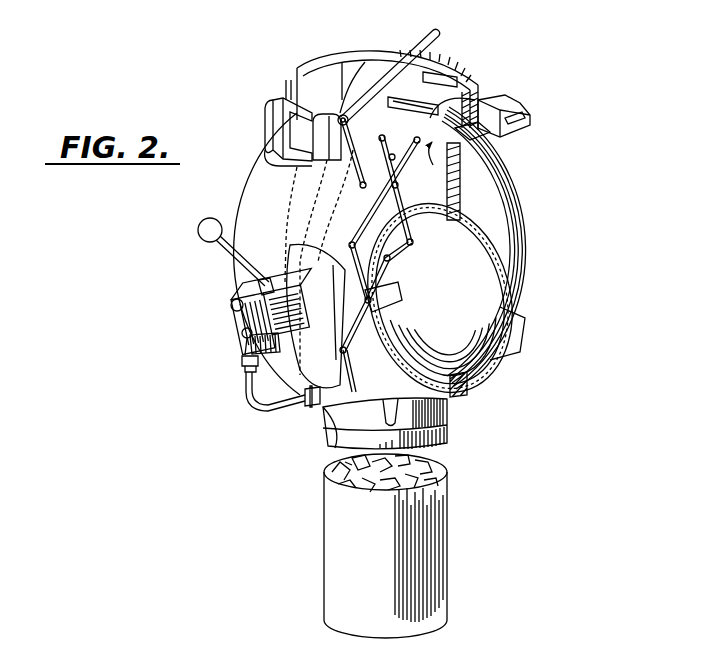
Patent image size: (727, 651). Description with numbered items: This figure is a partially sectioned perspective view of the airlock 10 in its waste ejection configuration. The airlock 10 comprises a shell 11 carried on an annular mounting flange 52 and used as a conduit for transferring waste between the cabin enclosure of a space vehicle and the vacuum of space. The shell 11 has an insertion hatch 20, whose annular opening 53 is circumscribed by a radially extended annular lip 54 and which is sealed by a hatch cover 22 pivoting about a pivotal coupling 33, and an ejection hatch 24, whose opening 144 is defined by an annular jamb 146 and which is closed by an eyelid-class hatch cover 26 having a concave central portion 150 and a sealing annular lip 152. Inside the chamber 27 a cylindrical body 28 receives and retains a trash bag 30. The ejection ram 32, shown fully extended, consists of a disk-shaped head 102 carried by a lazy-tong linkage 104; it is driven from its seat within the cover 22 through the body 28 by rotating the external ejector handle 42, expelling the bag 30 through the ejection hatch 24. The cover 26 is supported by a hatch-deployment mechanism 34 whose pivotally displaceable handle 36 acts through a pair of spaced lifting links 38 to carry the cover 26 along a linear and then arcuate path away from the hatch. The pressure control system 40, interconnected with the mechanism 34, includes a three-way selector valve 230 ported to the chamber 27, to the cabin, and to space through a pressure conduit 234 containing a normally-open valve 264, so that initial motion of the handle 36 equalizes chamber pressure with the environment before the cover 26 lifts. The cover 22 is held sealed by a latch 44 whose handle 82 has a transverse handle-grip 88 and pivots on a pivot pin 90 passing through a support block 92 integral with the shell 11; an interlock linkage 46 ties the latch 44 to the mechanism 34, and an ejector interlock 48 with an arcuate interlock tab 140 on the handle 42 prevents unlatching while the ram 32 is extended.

The airlock 10 is at (540, 228).
The shell 11 is at (522, 252).
The insertion hatch 20 is at (450, 152).
The hatch cover 22 is at (305, 72).
The ejection hatch 24 is at (455, 395).
The hatch cover 26 is at (485, 296).
The chamber 27 is at (480, 196).
The cylindrical body 28 is at (452, 218).
The trash bag 30 is at (440, 554).
The ejection ram 32 is at (388, 278).
The pivotal coupling 33 is at (522, 110).
The hatch-deployment mechanism 34 is at (232, 285).
The handle 36 is at (224, 232).
The lifting links 38 is at (390, 292).
The pressure control system 40 is at (238, 332).
The ejector handle 42 is at (432, 38).
The latch 44 is at (270, 120).
The interlock linkage 46 is at (292, 195).
The ejector interlock 48 is at (330, 112).
The mounting flange 52 is at (512, 330).
The annular opening 53 is at (445, 117).
The annular lip 54 is at (478, 137).
The handle 82 is at (280, 100).
The handle-grip 88 is at (288, 98).
The pivot pin 90 is at (328, 168).
The support block 92 is at (297, 160).
The head 102 is at (443, 432).
The lazy-tong linkage 104 is at (347, 233).
The interlock tab 140 is at (330, 110).
The opening 144 is at (340, 406).
The annular jamb 146 is at (468, 384).
The concave central portion 150 is at (478, 284).
The annular lip 152 is at (498, 216).
The three-way selector valve 230 is at (238, 318).
The pressure conduit 234 is at (262, 403).
The normally-open valve 264 is at (245, 338).